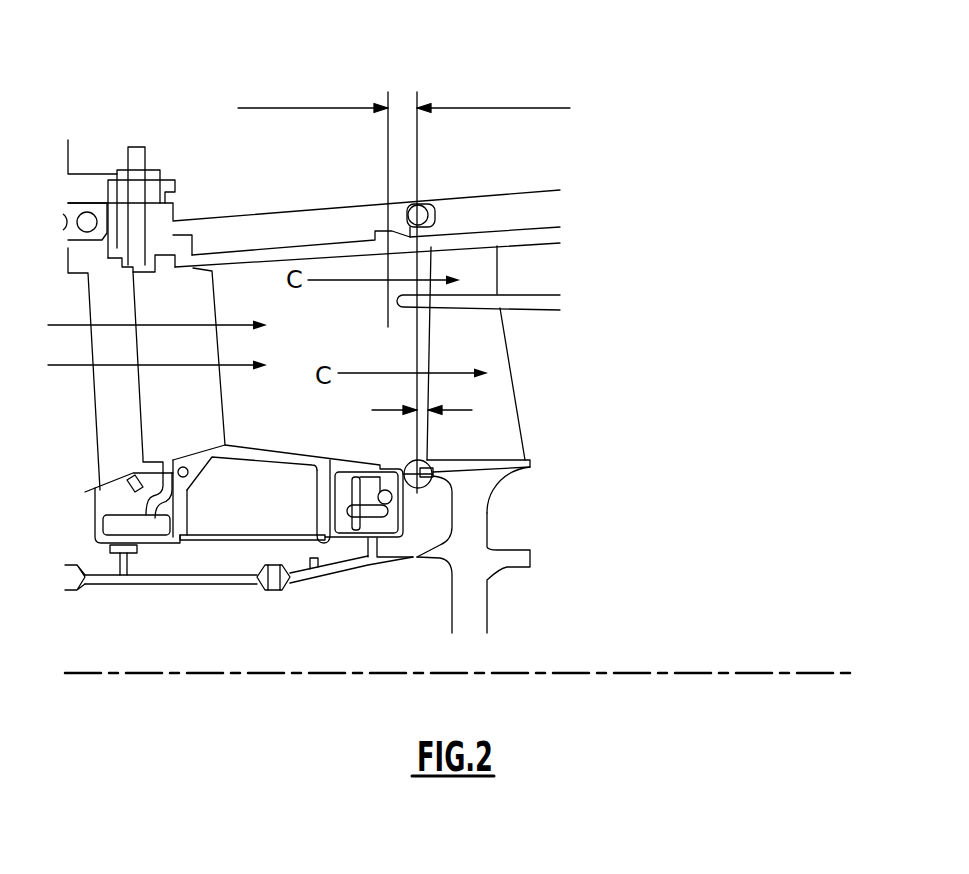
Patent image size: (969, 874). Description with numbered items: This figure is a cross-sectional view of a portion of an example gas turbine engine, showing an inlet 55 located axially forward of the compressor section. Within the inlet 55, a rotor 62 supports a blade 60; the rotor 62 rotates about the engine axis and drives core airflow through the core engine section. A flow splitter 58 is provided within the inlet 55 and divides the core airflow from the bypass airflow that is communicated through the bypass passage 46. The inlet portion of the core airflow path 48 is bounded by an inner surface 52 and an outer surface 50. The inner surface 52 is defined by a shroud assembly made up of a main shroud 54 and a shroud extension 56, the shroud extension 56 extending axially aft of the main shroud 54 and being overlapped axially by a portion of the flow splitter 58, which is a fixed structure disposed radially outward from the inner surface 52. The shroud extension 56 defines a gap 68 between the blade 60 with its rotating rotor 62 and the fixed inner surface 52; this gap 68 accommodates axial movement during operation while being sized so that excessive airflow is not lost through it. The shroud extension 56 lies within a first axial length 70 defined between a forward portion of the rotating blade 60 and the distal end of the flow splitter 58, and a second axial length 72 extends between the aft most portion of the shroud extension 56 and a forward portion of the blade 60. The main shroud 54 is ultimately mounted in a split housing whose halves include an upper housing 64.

The bypass passage 46 is at (543, 277).
The core airflow path 48 is at (247, 445).
The outer surface 50 is at (360, 258).
The inner surface 52 is at (325, 452).
The main shroud 54 is at (323, 487).
The inlet 55 is at (285, 470).
The shroud extension 56 is at (385, 523).
The flow splitter 58 is at (436, 309).
The blade 60 is at (500, 430).
The rotor 62 is at (482, 560).
The upper housing 64 is at (267, 226).
The gap 68 is at (433, 476).
The first axial length 70 is at (497, 108).
The second axial length 72 is at (463, 410).